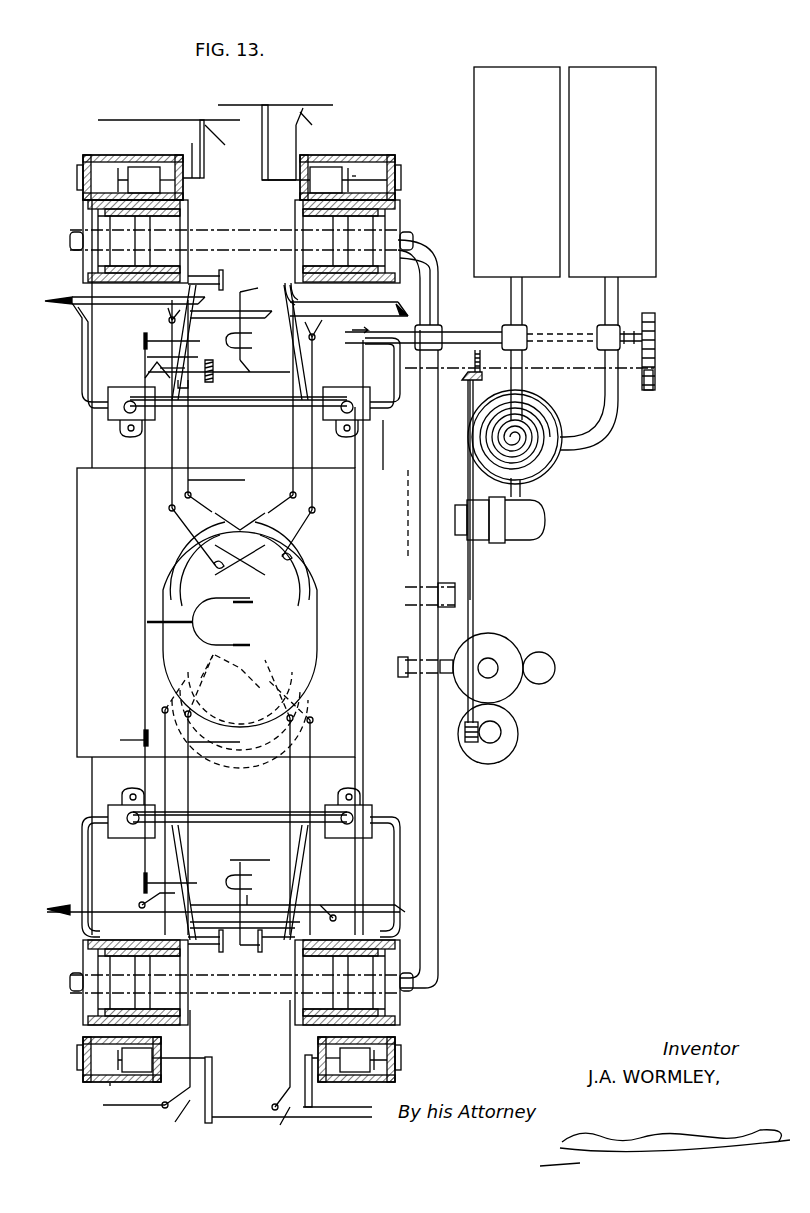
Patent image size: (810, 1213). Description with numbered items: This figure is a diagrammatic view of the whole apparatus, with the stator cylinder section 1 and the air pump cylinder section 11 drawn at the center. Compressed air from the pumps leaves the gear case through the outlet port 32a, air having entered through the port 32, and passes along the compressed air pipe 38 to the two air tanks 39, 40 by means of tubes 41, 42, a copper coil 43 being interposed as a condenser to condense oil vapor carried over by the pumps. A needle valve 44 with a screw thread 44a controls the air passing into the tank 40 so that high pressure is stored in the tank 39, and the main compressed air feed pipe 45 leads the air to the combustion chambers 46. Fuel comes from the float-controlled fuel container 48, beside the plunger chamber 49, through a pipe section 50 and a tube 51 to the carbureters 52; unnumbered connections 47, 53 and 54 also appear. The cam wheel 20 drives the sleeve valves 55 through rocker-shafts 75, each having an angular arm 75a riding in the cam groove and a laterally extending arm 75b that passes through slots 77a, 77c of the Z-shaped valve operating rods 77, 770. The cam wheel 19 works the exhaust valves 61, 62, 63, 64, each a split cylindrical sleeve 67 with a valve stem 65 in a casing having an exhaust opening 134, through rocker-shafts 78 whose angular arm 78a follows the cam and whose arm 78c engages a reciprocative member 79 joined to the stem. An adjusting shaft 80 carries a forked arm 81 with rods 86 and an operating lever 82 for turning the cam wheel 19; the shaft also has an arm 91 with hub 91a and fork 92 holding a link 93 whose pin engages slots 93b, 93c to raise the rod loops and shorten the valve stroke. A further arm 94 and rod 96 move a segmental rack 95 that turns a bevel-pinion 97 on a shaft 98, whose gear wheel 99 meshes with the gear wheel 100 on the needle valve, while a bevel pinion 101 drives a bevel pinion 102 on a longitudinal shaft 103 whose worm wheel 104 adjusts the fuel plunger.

The cylinder section 1 is at (380, 442).
The cylinder section 11 is at (92, 432).
The cam wheel 19 is at (240, 520).
The cam wheel 20 is at (300, 567).
The port 32 is at (458, 600).
The outlet port 32a is at (387, 515).
The compressed air pipe 38 is at (449, 528).
The air tank 39 is at (645, 262).
The air tank 40 is at (482, 91).
The tube 41 is at (620, 418).
The tube 42 is at (522, 340).
The copper coil 43 is at (542, 471).
The needle valve 44 is at (562, 332).
The screw thread 44a is at (632, 333).
The main compressed air feed pipe 45 is at (263, 248).
The combustion chamber 46 is at (83, 228).
The valve 47 is at (506, 532).
The float-controlled fuel container 48 is at (508, 682).
The plunger chamber 49 is at (516, 739).
The pipe section 50 is at (445, 660).
The tube 51 is at (214, 408).
The carbureter 52 is at (118, 415).
The rod 53 is at (253, 838).
The tie rod 54 is at (82, 365).
The sleeve valve 55 is at (170, 270).
The exhaust valve 61 is at (114, 168).
The exhaust valve 62 is at (352, 172).
The exhaust valve 63 is at (375, 1072).
The exhaust valve 64 is at (110, 1060).
The valve stem 65 is at (146, 167).
The split cylindrical sleeve 67 is at (350, 166).
The rocker-shaft 75 is at (168, 486).
The angular arm 75a is at (196, 545).
The laterally extending arm 75b is at (140, 904).
The valve operating rod 77 is at (318, 318).
The slot 77a is at (375, 327).
The slot 77c is at (178, 300).
The valve operating rod 770 is at (72, 304).
The rocker-shaft 78 is at (210, 130).
The angular arm 78a is at (268, 672).
The arm 78c is at (302, 115).
The reciprocative member 79 is at (162, 120).
The shaft 80 is at (147, 622).
The forked arm 81 is at (193, 622).
The operating lever 82 is at (135, 738).
The rod 86 is at (253, 603).
The arm 91 is at (220, 345).
The hub 91a is at (144, 340).
The fork 92 is at (245, 872).
The link 93 is at (245, 322).
The slot 93b is at (226, 262).
The slot 93c is at (250, 290).
The arm 94 is at (145, 378).
The segmental rack 95 is at (180, 370).
The rod 96 is at (168, 379).
The bevel-pinion 97 is at (216, 380).
The shaft 98 is at (566, 369).
The gear wheel 99 is at (655, 383).
The gear wheel 100 is at (655, 350).
The bevel pinion 101 is at (480, 374).
The bevel pinion 102 is at (462, 376).
The longitudinal shaft 103 is at (473, 582).
The worm wheel 104 is at (465, 740).
The opening 134 is at (77, 178).